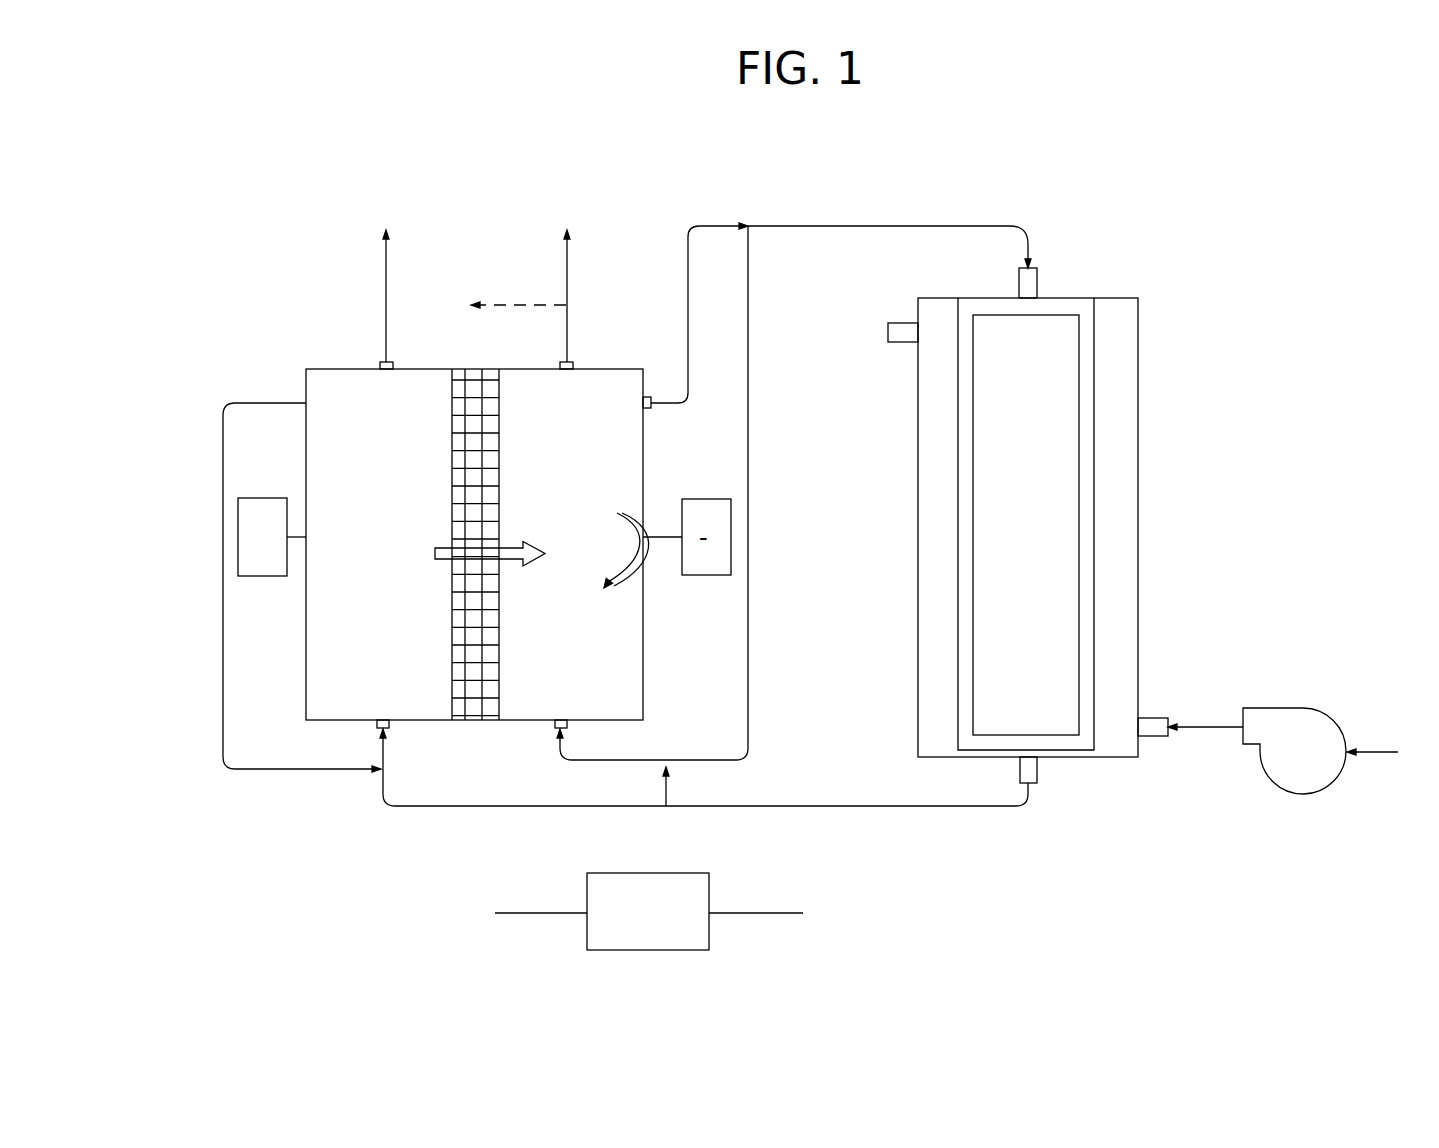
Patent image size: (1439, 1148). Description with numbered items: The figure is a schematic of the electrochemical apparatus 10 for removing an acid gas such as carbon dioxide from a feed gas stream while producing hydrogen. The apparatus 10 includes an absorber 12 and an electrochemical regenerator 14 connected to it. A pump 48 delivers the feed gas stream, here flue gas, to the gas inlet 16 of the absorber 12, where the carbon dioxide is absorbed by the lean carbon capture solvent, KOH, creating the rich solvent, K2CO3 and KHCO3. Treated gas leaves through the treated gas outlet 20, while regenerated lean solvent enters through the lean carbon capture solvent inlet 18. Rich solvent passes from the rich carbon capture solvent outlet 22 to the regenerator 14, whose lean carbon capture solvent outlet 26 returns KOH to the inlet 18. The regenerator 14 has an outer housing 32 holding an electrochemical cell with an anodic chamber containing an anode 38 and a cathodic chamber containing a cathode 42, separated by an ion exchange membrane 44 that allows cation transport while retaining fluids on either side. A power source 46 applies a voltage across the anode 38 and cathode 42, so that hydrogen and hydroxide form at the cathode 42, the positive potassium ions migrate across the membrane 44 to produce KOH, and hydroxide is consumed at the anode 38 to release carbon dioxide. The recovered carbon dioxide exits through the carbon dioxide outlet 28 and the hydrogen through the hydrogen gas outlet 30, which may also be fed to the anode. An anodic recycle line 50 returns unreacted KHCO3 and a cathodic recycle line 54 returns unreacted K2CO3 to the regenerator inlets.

The electrochemical apparatus 10 is at (1169, 186).
The absorber 12 is at (1138, 388).
The electrochemical regenerator 14 is at (328, 368).
The gas inlet 16 is at (1160, 718).
The lean carbon capture solvent inlet 18 is at (1037, 278).
The treated gas outlet 20 is at (886, 333).
The rich carbon capture solvent outlet 22 is at (1035, 773).
The lean carbon capture solvent outlet 26 is at (647, 397).
The recovered acid gas or carbon dioxide outlet 28 is at (383, 362).
The generated hydrogen gas outlet 30 is at (570, 362).
The outer housing 32 is at (303, 682).
The anode 38 is at (454, 910).
The cathode 42 is at (855, 910).
The ion exchange membrane 44 is at (457, 620).
The power source 46 is at (637, 873).
The pump 48 is at (1313, 709).
The anodic recycle line 50 is at (220, 703).
The cathodic recycle line 54 is at (748, 479).